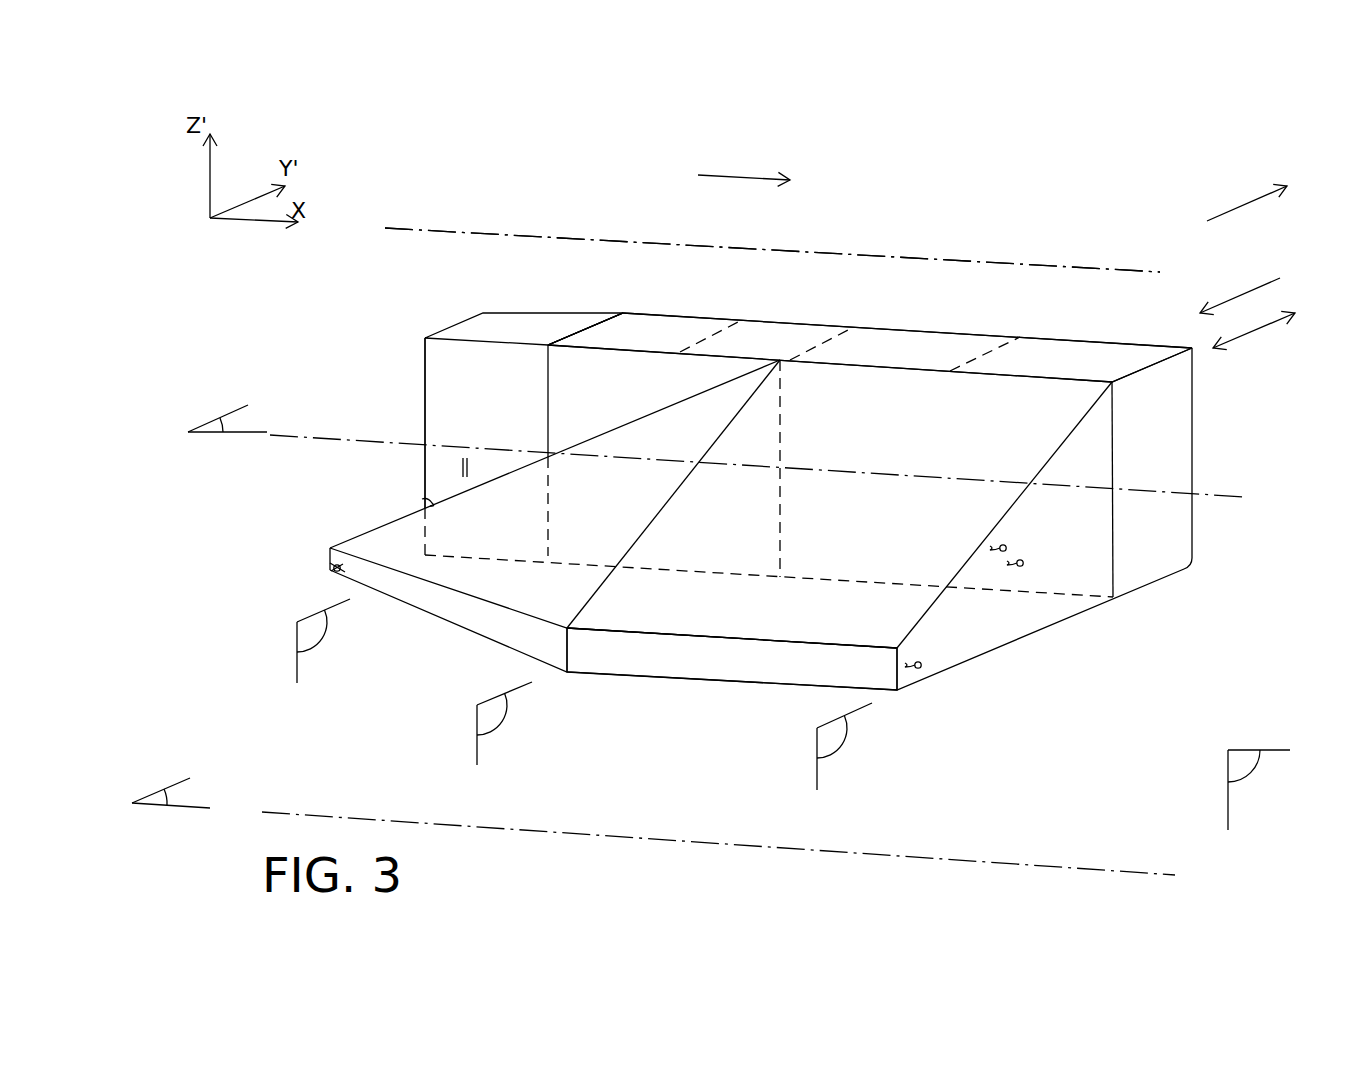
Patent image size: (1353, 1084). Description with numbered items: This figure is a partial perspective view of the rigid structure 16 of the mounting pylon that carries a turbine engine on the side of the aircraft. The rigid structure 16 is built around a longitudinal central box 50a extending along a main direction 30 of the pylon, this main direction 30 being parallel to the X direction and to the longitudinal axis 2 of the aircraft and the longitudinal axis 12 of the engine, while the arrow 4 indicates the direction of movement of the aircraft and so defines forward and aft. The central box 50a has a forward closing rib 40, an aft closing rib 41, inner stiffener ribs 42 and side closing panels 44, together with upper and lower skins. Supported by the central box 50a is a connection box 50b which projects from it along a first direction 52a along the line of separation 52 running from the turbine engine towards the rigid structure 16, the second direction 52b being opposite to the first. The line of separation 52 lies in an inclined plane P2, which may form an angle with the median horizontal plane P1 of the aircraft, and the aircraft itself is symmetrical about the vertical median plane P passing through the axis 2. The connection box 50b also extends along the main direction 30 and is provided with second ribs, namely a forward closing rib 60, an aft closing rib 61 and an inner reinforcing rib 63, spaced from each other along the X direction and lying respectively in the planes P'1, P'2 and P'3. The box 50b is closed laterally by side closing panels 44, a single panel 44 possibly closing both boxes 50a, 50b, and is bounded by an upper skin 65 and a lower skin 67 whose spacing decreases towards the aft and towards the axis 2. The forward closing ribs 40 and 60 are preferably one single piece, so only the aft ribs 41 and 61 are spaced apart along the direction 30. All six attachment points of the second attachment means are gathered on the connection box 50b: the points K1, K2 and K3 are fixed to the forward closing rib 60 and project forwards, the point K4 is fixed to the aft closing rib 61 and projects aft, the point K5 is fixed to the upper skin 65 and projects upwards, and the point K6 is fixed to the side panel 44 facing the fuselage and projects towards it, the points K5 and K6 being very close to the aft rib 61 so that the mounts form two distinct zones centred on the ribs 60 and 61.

The longitudinal axis 2 is at (1150, 860).
The arrow 4 is at (735, 176).
The longitudinal axis 12 is at (1057, 268).
The rigid structure 16 is at (441, 280).
The main direction 30 is at (1235, 494).
The forward closing rib 40 is at (1183, 436).
The aft closing rib 41 is at (465, 312).
The inner stiffener ribs 42 is at (703, 338).
The side closing panels 44 is at (652, 310).
The longitudinal central box 50a is at (904, 338).
The connection box 50b is at (773, 670).
The line of separation 52 is at (1255, 326).
The first direction 52a is at (1240, 295).
The second direction 52b is at (1245, 203).
The forward closing rib 60 is at (990, 630).
The aft closing rib 61 is at (345, 528).
The inner reinforcing rib 63 is at (640, 490).
The upper skin 65 is at (920, 448).
The lower skin 67 is at (717, 684).
The attachment point K1 is at (922, 668).
The attachment point K2 is at (1024, 564).
The attachment point K3 is at (1003, 552).
The attachment point K4 is at (425, 494).
The attachment point K5 is at (465, 456).
The attachment point K6 is at (330, 570).
The vertical median plane P is at (1259, 750).
The median horizontal plane P1 is at (150, 795).
The inclined plane P2 is at (212, 427).
The plane P'1 is at (863, 746).
The plane P'2 is at (284, 641).
The plane P'3 is at (465, 723).